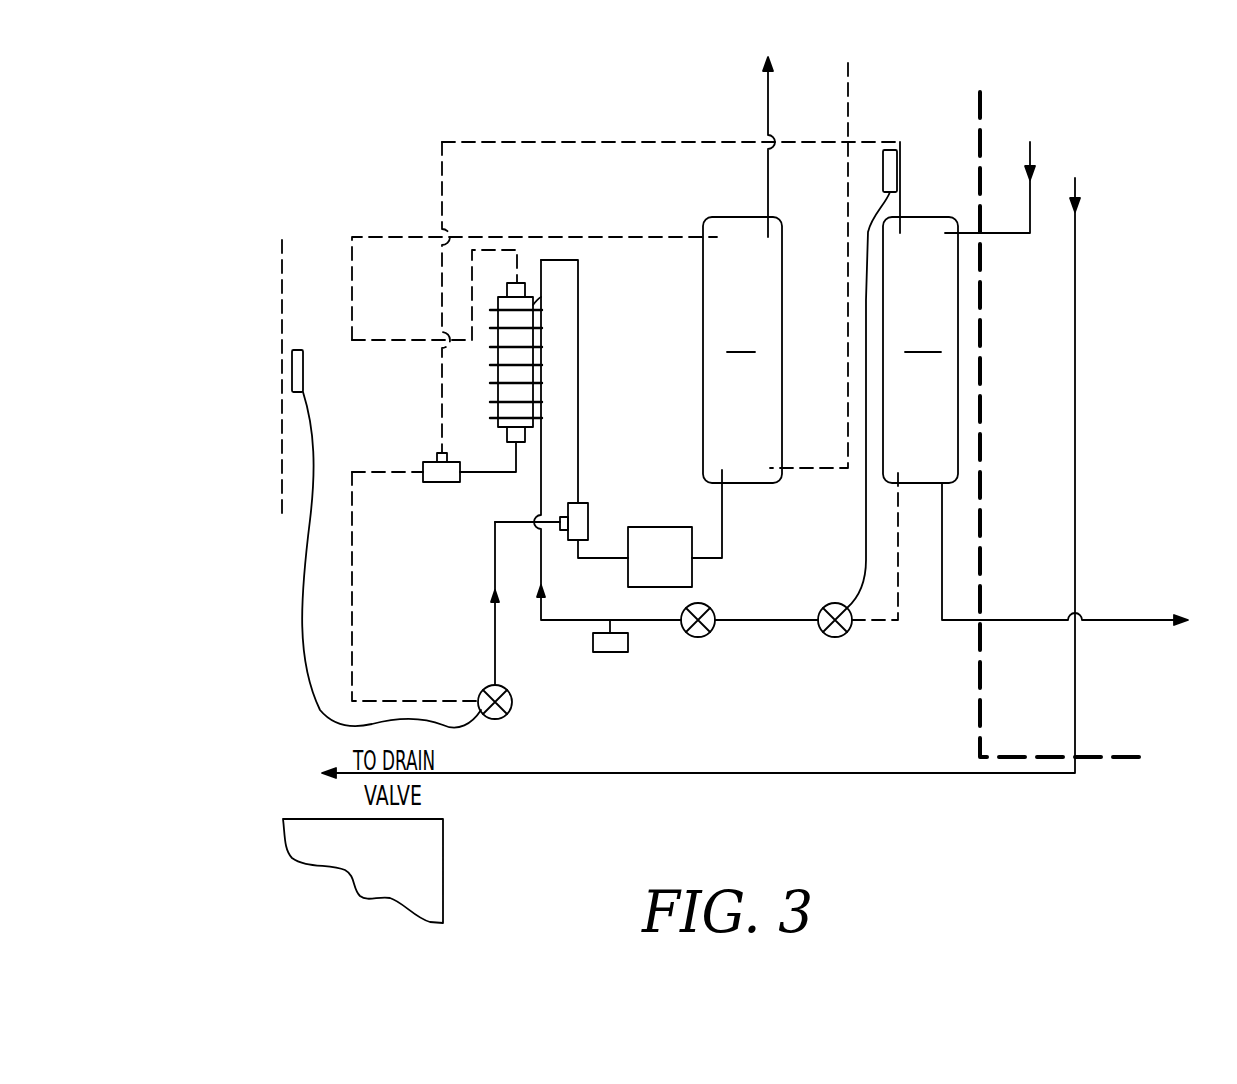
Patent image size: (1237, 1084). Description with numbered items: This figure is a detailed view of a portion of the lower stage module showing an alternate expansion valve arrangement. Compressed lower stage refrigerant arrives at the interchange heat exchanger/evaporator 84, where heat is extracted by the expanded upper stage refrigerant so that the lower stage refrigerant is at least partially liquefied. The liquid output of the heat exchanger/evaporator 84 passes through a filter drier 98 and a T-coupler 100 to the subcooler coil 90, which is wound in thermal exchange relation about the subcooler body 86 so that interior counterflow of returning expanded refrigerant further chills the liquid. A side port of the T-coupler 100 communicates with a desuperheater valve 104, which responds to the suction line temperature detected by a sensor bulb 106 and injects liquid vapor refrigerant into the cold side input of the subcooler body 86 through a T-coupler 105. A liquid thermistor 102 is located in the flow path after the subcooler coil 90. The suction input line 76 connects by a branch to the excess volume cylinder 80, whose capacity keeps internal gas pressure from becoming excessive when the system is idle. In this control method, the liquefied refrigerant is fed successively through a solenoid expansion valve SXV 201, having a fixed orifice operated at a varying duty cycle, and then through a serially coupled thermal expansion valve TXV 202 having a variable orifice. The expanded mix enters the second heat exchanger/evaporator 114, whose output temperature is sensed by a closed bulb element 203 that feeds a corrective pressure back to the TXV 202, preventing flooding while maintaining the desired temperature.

The shunt line 76 is at (282, 280).
The excess volume cylinder 80 is at (443, 870).
The interchange heat exchanger/evaporator 84 is at (742, 270).
The subcooler body 86 is at (518, 287).
The subcooler coil 90 is at (535, 348).
The filter drier 98 is at (692, 575).
The T-coupler 100 is at (588, 522).
The liquid thermistor 102 is at (593, 637).
The desuperheater valve 104 is at (512, 700).
The T-coupler 105 is at (438, 482).
The sensor bulb 106 is at (292, 376).
The second heat exchanger/evaporator 114 is at (1035, 383).
The solenoid expansion valve (SXV) 201 is at (712, 632).
The thermal expansion valve (TXV) 202 is at (850, 630).
The sensor bulb 203 is at (892, 168).